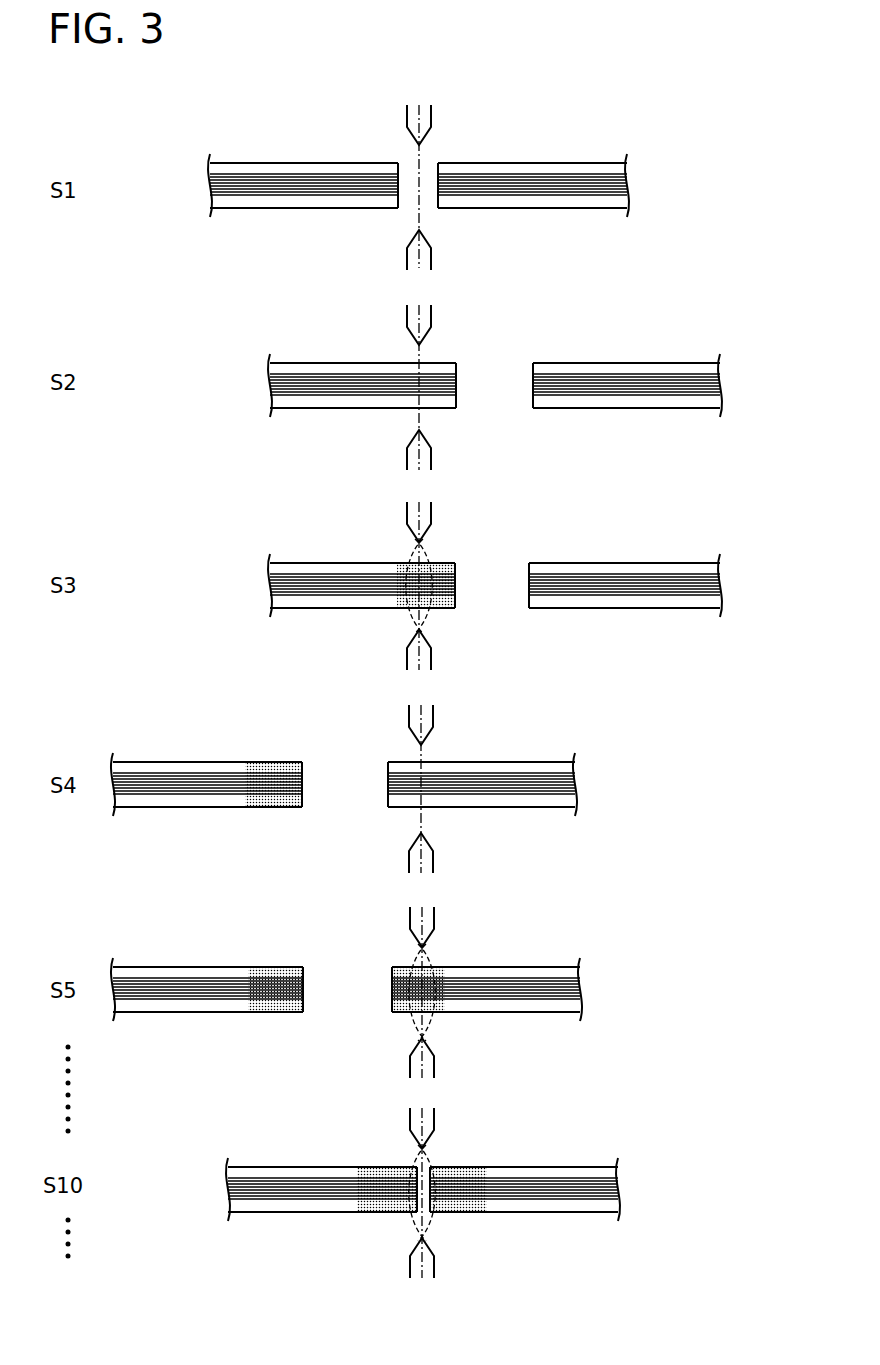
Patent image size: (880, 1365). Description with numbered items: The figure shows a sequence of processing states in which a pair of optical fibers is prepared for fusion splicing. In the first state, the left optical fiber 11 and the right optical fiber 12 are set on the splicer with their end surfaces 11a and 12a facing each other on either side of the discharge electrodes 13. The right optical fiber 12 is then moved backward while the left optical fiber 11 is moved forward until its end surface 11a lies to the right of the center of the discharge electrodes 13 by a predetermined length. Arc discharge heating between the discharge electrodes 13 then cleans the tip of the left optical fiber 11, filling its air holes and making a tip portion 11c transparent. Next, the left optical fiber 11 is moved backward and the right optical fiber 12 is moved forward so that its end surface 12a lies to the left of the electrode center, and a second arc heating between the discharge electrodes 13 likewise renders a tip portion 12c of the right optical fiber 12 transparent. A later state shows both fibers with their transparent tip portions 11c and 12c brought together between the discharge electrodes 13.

The left optical fiber 11 is at (303, 163).
The right optical fiber 12 is at (527, 160).
The discharge electrodes 13 is at (431, 115).
The end surface of the left optical fiber 11a is at (398, 195).
The end surface of the right optical fiber 12a is at (438, 195).
The tip portion of the left optical fiber 11c is at (402, 563).
The tip portion of the right optical fiber 12c is at (433, 973).